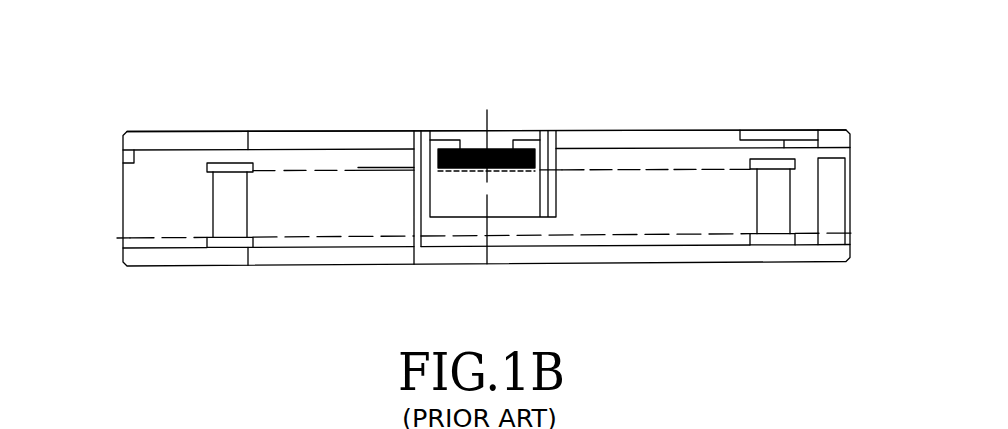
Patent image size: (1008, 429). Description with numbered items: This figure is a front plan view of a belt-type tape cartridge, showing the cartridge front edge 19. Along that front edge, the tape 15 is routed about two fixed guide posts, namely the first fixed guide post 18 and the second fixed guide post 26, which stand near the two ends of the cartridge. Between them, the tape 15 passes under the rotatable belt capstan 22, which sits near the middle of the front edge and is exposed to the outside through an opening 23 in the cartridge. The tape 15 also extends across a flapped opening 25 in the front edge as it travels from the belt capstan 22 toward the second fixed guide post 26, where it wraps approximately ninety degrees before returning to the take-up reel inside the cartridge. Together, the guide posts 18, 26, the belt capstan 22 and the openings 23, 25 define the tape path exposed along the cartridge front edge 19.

The cartridge front edge 19 is at (101, 197).
The flapped opening 25 is at (313, 153).
The opening 23 is at (477, 108).
The belt capstan 22 is at (500, 150).
The second fixed guide post 26 is at (222, 206).
The first fixed guide post 18 is at (782, 208).
The tape 15 is at (670, 208).